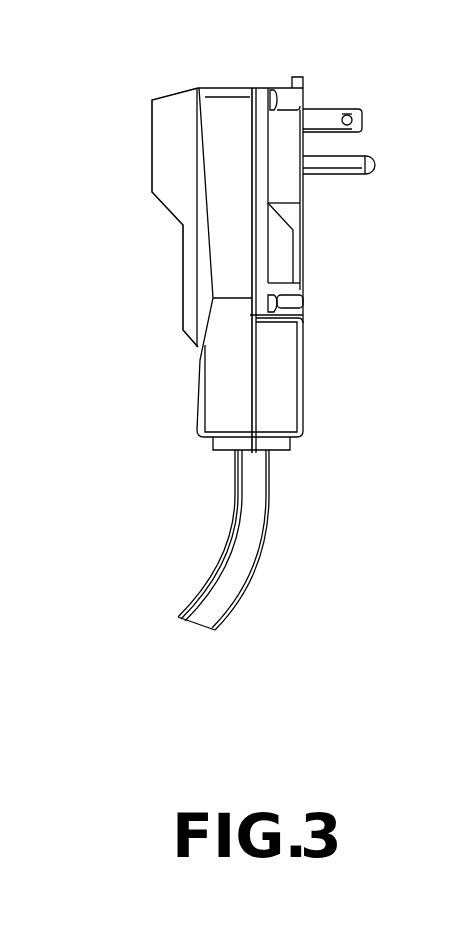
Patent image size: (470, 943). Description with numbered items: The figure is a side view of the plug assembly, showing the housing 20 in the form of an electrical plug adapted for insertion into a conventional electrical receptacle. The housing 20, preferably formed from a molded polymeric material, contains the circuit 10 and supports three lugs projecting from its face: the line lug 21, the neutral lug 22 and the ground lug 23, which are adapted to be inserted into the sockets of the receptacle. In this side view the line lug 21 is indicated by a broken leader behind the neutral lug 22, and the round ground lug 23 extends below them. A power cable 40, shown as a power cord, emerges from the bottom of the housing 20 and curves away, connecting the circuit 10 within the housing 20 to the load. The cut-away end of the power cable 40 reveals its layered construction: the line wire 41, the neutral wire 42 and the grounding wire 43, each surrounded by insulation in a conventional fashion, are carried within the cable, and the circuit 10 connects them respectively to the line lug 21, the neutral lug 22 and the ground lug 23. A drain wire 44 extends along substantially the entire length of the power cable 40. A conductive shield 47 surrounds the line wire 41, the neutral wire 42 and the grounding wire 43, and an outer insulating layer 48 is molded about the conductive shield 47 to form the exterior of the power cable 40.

The circuit 10 is at (112, 95).
The housing 20 is at (187, 277).
The line lug 21 is at (355, 103).
The neutral lug 22 is at (358, 120).
The ground lug 23 is at (376, 168).
The power cable 40 is at (235, 468).
The line wire 41 is at (238, 498).
The neutral wire 42 is at (236, 540).
The grounding wire 43 is at (213, 577).
The drain wire 44 is at (220, 595).
The conductive shield 47 is at (248, 543).
The outer insulating layer 48 is at (258, 497).